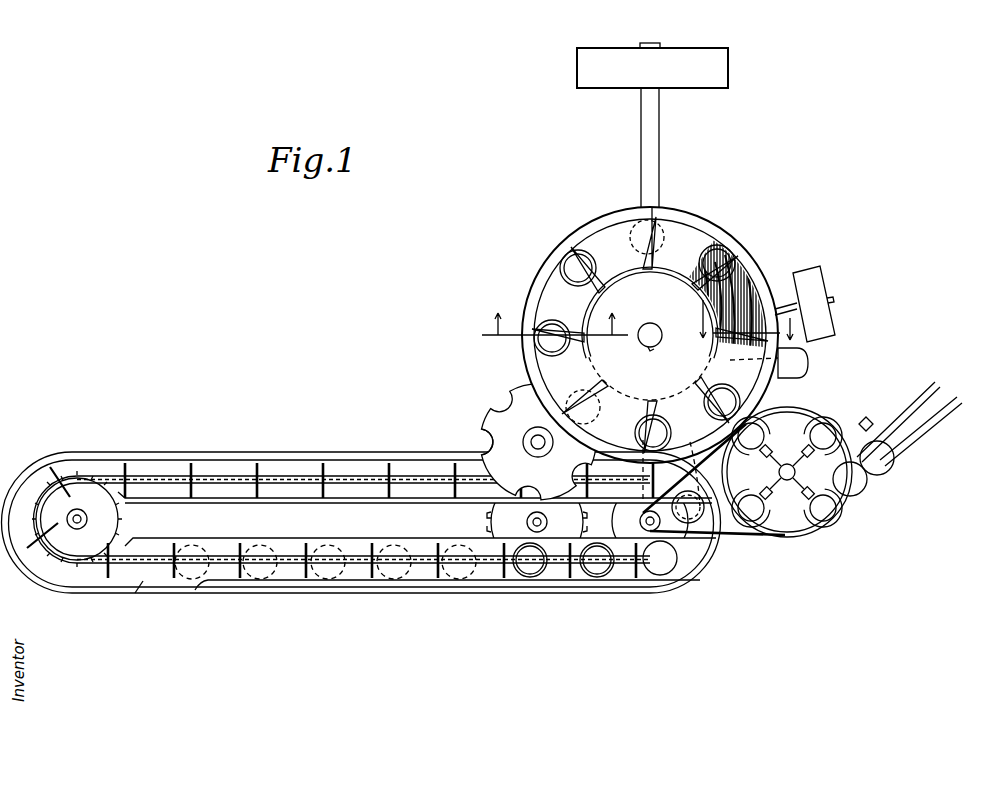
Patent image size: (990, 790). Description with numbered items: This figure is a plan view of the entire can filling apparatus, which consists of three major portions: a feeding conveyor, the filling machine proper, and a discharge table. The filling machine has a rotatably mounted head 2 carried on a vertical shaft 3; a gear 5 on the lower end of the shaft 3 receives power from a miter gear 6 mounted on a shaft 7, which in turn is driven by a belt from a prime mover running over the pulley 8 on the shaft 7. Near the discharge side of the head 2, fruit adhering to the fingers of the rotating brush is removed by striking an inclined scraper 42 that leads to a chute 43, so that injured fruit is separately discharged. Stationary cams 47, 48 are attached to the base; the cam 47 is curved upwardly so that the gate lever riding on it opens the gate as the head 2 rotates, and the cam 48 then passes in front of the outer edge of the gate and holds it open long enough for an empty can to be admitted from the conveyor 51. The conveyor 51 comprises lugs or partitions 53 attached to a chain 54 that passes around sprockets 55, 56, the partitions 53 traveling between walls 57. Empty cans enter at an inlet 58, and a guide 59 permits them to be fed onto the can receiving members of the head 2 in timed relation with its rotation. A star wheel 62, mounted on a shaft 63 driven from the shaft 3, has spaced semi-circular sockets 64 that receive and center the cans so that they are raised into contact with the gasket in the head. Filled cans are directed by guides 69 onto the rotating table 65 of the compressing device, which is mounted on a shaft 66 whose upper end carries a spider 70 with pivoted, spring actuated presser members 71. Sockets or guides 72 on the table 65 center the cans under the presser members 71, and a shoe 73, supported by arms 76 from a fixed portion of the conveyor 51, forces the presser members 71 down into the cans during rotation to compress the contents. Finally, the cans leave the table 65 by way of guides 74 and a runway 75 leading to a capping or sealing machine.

The head 2 is at (737, 240).
The vertical shaft 3 is at (652, 323).
The gear 5 is at (555, 337).
The miter gear 6 is at (686, 376).
The shaft 7 is at (660, 143).
The pulley 8 is at (720, 68).
The scraper 42 is at (800, 364).
The chute 43 is at (803, 360).
The cam 47 is at (754, 365).
The cam 48 is at (662, 393).
The conveyor 51 is at (344, 599).
The lugs or partitions 53 is at (188, 470).
The chain 54 is at (222, 480).
The sprocket 55 is at (73, 492).
The sprocket 56 is at (642, 560).
The walls 57 is at (283, 500).
The inlet 58 is at (167, 587).
The guide 59 is at (671, 472).
The star wheel 62 is at (489, 411).
The shaft 63 is at (537, 438).
The semi-circular depressions or sockets 64 is at (486, 441).
The rotating table 65 is at (808, 525).
The shaft 66 is at (788, 482).
The guides 69 is at (765, 418).
The spider 70 is at (843, 440).
The presser members 71 is at (832, 516).
The sockets or guides 72 is at (786, 533).
The shoe 73 is at (763, 540).
The guides 74 is at (948, 425).
The runway 75 is at (940, 393).
The arms 76 is at (738, 536).